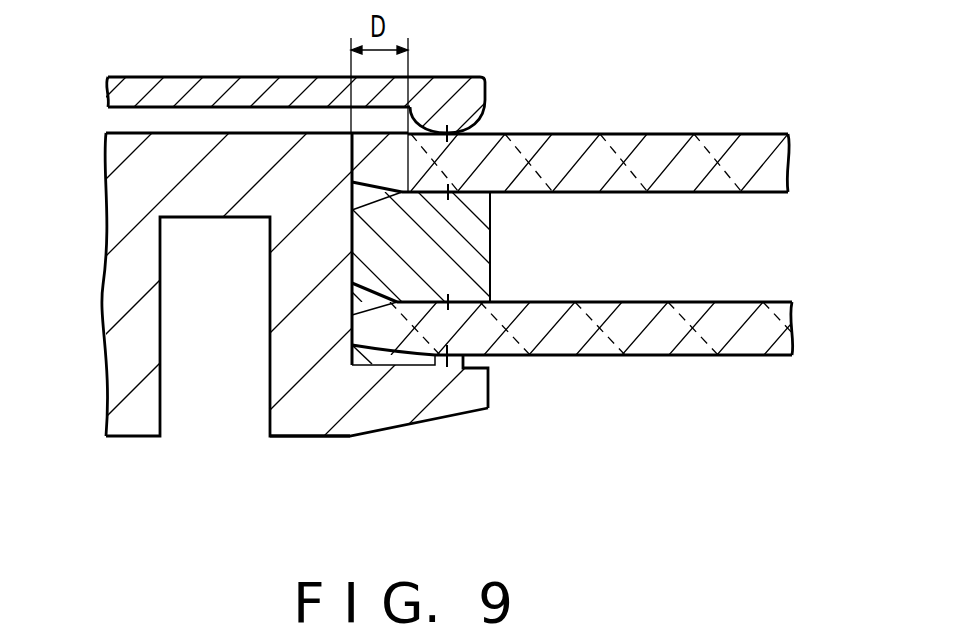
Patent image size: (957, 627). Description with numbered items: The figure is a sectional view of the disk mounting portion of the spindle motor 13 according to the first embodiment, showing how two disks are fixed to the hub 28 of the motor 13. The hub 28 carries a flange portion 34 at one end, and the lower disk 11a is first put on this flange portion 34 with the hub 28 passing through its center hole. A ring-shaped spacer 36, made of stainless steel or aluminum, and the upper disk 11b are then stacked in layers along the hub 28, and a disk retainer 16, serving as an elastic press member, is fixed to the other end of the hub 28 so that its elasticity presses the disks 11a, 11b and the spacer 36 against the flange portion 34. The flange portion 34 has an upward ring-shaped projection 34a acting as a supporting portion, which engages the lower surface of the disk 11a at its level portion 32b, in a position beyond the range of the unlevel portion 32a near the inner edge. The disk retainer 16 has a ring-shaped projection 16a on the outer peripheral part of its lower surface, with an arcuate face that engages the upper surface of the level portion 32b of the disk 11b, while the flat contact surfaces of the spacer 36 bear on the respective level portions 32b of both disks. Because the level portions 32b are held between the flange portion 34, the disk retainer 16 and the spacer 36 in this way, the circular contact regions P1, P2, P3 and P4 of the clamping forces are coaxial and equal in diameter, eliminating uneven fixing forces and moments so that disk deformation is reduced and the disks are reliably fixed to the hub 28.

The spindle motor 13 is at (103, 278).
The disk retainer 16 is at (250, 77).
The ring-shaped projection 16a is at (428, 110).
The disk 11a is at (697, 301).
The disk 11b is at (716, 133).
The unlevel portion 32a is at (377, 140).
The level portion 32b is at (626, 150).
The ring-shaped spacer 36 is at (490, 255).
The flange portion 34 is at (432, 415).
The ring-shaped projection 34a is at (455, 365).
The hub 28 is at (303, 422).
The circular contact region P1 is at (472, 130).
The circular contact region P2 is at (455, 197).
The circular contact region P3 is at (452, 300).
The circular contact region P4 is at (450, 347).